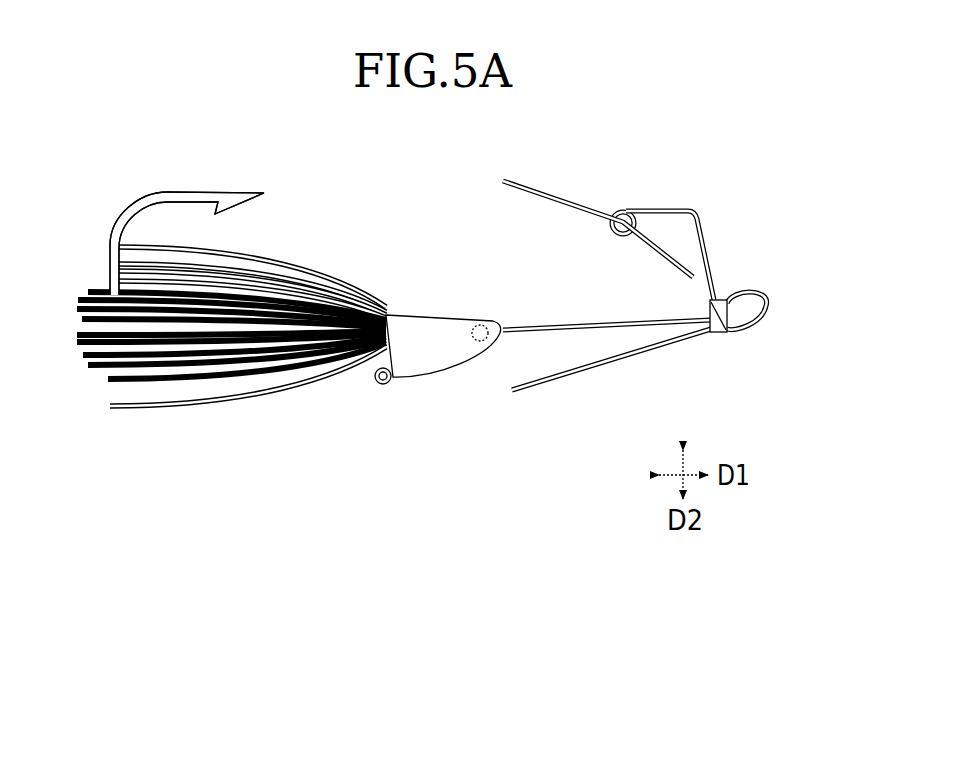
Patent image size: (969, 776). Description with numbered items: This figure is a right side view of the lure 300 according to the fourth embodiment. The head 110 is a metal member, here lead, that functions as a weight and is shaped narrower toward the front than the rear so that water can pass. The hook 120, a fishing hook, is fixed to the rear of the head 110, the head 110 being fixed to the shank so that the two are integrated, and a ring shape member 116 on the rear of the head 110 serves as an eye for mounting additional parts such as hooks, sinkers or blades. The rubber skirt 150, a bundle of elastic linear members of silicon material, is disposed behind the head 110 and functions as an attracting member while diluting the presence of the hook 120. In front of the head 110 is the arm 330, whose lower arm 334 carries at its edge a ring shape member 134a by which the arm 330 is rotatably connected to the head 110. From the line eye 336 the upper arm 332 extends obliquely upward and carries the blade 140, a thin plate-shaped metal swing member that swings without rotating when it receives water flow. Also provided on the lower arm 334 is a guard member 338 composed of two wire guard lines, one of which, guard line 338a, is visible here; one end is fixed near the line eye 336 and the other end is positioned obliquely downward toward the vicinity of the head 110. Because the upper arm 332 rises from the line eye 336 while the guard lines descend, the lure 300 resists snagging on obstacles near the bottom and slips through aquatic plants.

The lure 300 is at (691, 82).
The hook 120 is at (193, 200).
The rubber skirt 150 is at (218, 421).
The head 110 is at (453, 383).
The ring shape member 134a is at (483, 325).
The ring shape member 116 is at (377, 384).
The lower arm 334 is at (578, 323).
The guard member 338 is at (668, 358).
The guard line 338a is at (556, 380).
The upper arm 332 is at (703, 241).
The blade 140 is at (590, 208).
The line eye 336 is at (770, 309).
The arm 330 is at (756, 276).